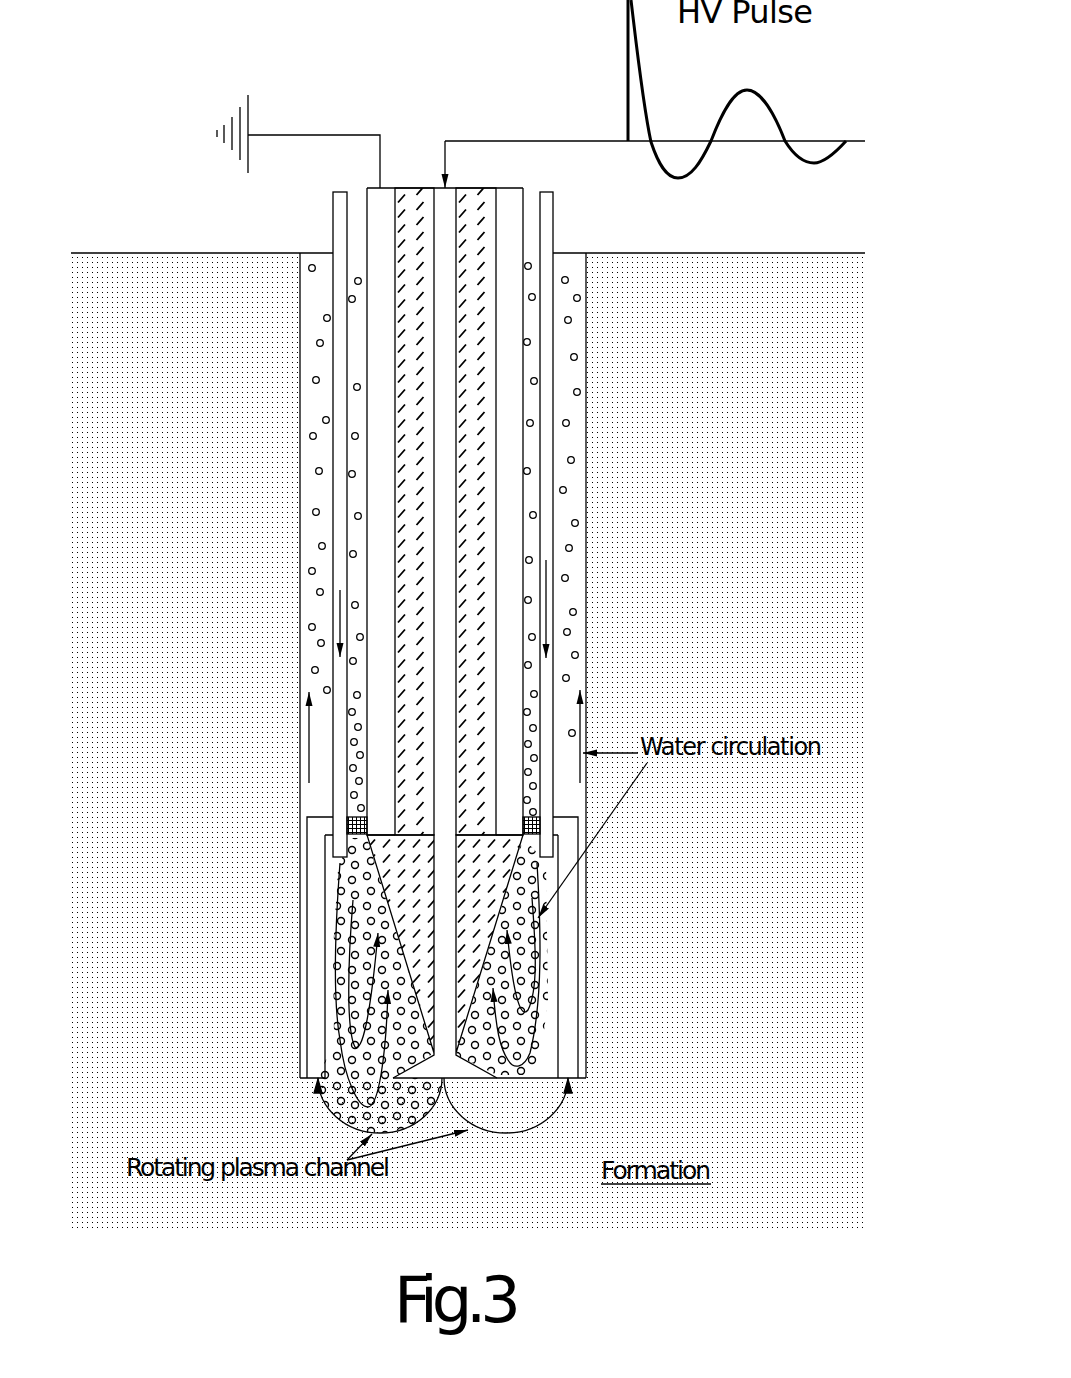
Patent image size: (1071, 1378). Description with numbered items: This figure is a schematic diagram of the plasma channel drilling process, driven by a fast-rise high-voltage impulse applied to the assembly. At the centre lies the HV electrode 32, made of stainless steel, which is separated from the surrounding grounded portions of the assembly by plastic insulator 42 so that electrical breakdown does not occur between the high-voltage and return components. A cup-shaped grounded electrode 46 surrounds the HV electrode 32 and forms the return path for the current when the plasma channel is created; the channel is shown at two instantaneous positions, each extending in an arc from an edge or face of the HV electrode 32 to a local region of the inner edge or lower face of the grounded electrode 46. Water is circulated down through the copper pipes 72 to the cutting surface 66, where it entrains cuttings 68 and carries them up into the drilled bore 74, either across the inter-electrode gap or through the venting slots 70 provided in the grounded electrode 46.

The drilled bore 74 is at (300, 427).
The plastic insulator 42 is at (470, 423).
The pipes 72 is at (555, 477).
The venting slots 70 is at (528, 830).
The cuttings 68 is at (352, 890).
The grounded electrode 46 is at (562, 956).
The cutting surface 66 is at (544, 1078).
The HV electrode 32 is at (461, 1086).